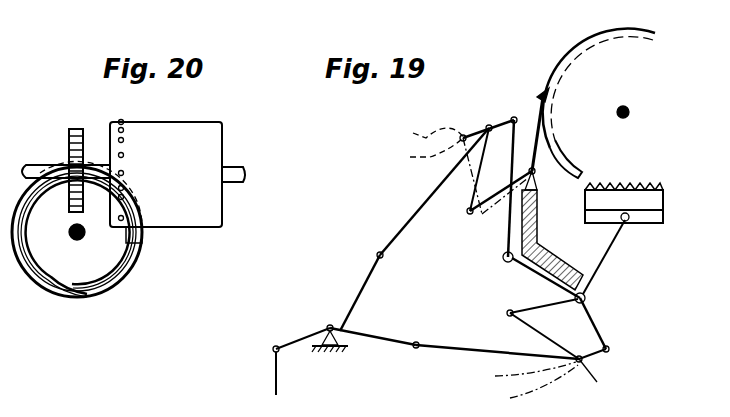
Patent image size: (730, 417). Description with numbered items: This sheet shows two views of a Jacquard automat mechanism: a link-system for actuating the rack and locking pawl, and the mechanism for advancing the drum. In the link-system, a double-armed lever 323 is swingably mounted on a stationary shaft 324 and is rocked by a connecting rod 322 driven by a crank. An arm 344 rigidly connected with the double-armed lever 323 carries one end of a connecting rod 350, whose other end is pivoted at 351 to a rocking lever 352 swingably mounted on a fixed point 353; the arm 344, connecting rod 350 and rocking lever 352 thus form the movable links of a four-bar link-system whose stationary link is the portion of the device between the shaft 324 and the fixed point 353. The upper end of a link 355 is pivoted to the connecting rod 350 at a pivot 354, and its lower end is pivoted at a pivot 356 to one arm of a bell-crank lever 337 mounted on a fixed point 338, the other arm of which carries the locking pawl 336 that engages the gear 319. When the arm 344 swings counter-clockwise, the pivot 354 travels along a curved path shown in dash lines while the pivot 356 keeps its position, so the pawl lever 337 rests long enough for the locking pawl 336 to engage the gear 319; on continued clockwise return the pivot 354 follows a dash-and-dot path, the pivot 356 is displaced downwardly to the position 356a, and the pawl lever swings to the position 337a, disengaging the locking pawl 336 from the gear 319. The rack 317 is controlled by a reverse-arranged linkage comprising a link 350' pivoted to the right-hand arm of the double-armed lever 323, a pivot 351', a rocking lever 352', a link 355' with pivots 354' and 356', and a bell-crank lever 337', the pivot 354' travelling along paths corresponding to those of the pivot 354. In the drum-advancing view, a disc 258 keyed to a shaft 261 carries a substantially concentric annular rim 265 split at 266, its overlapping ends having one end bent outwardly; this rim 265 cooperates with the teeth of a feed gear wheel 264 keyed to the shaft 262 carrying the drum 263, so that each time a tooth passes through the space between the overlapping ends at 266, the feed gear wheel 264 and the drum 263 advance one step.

In FIG. 20, the disc 258 is at (128, 265).
In FIG. 20, the shaft 261 is at (73, 238).
In FIG. 20, the shaft 262 is at (25, 172).
In FIG. 20, the drum 263 is at (157, 127).
In FIG. 20, the feed gear wheel 264 is at (72, 130).
In FIG. 20, the annular rim 265 is at (133, 240).
In FIG. 20, the split 266 is at (80, 297).
In FIG. 19, the rack 317 is at (630, 203).
In FIG. 19, the gear 319 is at (588, 70).
In FIG. 19, the connecting rod 322 is at (275, 380).
In FIG. 19, the double-armed lever 323 is at (303, 343).
In FIG. 19, the stationary shaft 324 is at (328, 325).
In FIG. 19, the locking pawl 336 is at (544, 92).
In FIG. 19, the bell-crank lever 337 is at (534, 193).
In FIG. 19, the position of pawl lever 337a is at (552, 112).
In FIG. 19, the fixed point 338 is at (563, 152).
In FIG. 19, the arm 344 is at (347, 302).
In FIG. 19, the connecting rod 350 is at (479, 217).
In FIG. 19, the pivot 351 is at (493, 166).
In FIG. 19, the rocking lever 352 is at (501, 207).
In FIG. 19, the fixed point 353 is at (504, 261).
In FIG. 19, the pivot 354 is at (445, 125).
In FIG. 19, the link 355 is at (467, 171).
In FIG. 19, the pivot 356 is at (454, 215).
In FIG. 19, the position of pivot 356a is at (472, 222).
In FIG. 19, the bell-crank lever 337' is at (575, 261).
In FIG. 19, the link 350' is at (608, 362).
In FIG. 19, the pivot 351' is at (627, 343).
In FIG. 19, the rocking lever 352' is at (609, 323).
In FIG. 19, the pivot 354' is at (551, 382).
In FIG. 19, the link 355' is at (541, 336).
In FIG. 19, the pivot 356' is at (528, 318).